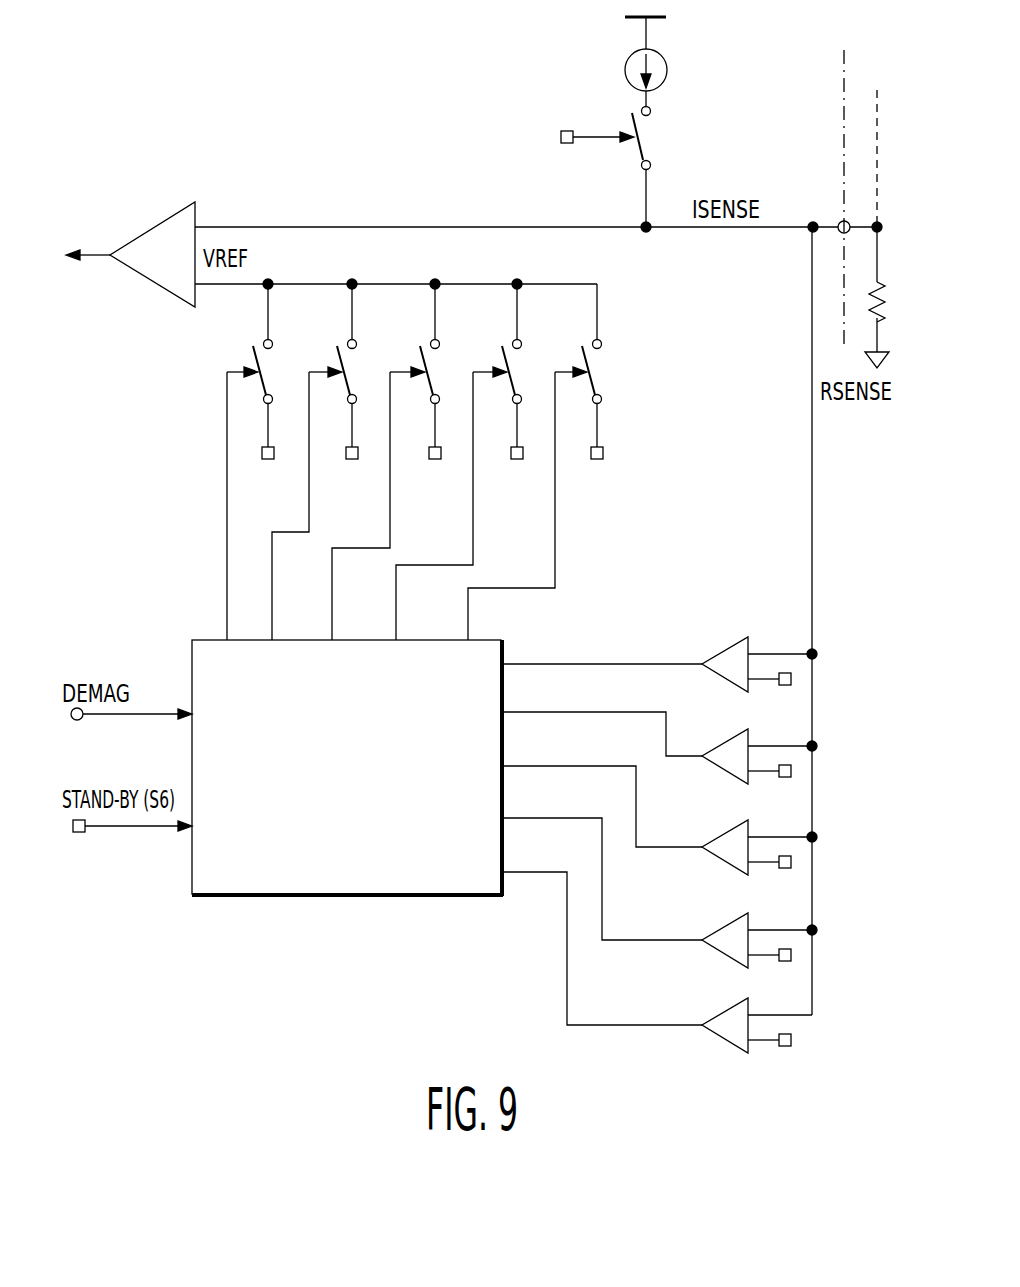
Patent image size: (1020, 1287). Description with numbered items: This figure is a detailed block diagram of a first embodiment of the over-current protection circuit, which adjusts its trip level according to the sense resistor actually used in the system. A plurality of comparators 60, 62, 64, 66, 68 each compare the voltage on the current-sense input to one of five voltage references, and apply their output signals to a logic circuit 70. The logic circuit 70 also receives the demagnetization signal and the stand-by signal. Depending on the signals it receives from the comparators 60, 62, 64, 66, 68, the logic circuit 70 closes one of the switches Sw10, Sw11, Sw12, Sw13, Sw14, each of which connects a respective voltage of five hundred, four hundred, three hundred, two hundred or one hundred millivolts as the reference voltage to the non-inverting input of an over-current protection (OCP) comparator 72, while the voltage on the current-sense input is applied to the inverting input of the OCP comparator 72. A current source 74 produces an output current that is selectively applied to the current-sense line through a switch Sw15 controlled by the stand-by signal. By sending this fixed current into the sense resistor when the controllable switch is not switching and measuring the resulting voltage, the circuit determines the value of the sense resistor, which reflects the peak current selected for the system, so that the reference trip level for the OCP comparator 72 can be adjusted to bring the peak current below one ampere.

The comparator 60 is at (733, 655).
The comparator 62 is at (733, 747).
The comparator 64 is at (733, 838).
The comparator 66 is at (733, 931).
The comparator 68 is at (733, 1016).
The logic circuit 70 is at (280, 880).
The over-current protection (OCP) comparator 72 is at (160, 270).
The current source 74 is at (625, 63).
The switch Sw10 is at (264, 382).
The switch Sw11 is at (348, 382).
The switch Sw12 is at (431, 382).
The switch Sw13 is at (513, 385).
The switch Sw14 is at (607, 377).
The switch Sw15 is at (640, 136).